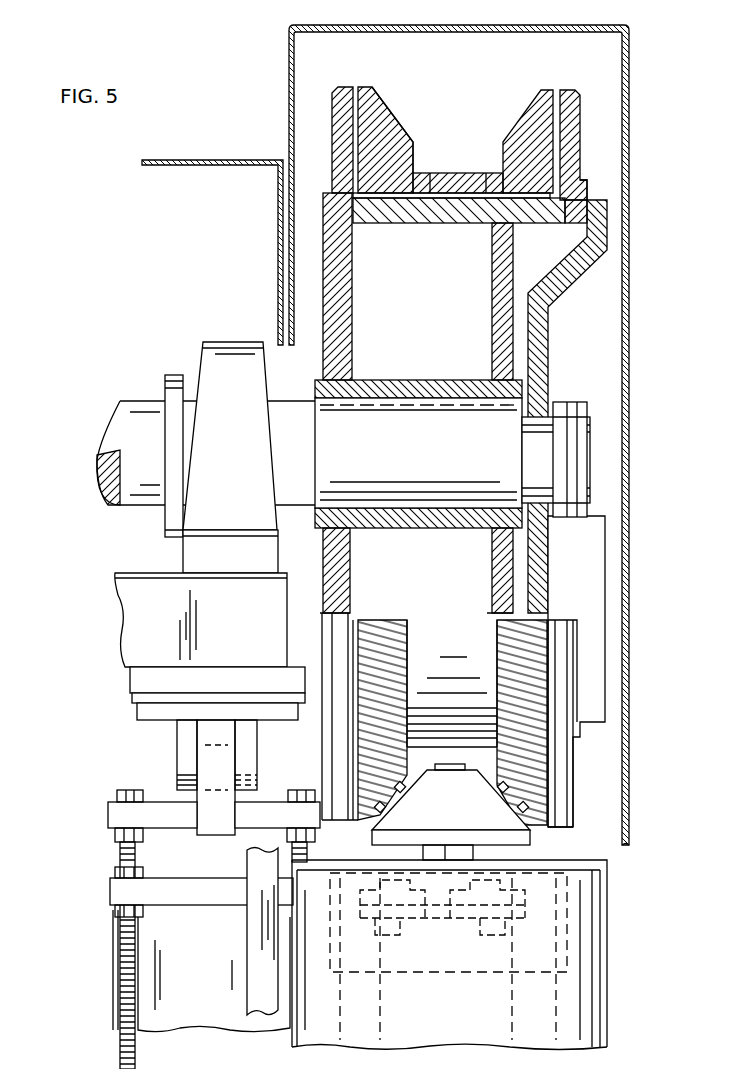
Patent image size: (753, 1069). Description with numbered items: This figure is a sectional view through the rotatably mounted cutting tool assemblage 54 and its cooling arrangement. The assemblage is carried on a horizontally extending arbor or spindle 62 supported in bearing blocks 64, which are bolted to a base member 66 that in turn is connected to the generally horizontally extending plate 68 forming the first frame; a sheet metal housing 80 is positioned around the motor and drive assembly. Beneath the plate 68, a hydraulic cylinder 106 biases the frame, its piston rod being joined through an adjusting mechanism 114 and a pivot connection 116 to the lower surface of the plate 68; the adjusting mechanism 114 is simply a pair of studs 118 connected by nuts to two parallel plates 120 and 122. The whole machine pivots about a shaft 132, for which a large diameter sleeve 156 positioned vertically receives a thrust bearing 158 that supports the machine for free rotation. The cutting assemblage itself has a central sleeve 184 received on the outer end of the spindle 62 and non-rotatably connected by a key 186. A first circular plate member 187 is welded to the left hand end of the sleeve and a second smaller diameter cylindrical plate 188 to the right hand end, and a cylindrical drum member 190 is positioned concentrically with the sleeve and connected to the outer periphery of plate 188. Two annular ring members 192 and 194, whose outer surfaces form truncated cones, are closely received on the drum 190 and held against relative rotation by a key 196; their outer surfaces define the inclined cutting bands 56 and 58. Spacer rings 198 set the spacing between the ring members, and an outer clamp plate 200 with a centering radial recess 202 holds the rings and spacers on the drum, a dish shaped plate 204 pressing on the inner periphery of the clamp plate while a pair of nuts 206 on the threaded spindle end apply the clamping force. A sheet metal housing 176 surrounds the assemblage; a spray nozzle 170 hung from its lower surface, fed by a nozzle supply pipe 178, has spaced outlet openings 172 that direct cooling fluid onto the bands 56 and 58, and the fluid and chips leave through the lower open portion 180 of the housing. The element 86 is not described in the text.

The cutting tool assemblage 54 is at (403, 115).
The inclined cutting band 56 is at (533, 108).
The inclined cutting band 58 is at (405, 126).
The spindle 62 is at (134, 400).
The bearing block 64 is at (222, 340).
The base member 66 is at (134, 626).
The plate 68 is at (137, 683).
The sheet metal housing 80 is at (192, 160).
The arm 86 is at (257, 949).
The hydraulic cylinder 106 is at (117, 1000).
The adjusting mechanism 114 is at (176, 748).
The pivot connection 116 is at (243, 748).
The stud 118 is at (125, 968).
The plate 120 is at (118, 893).
The plate 122 is at (118, 813).
The shaft 132 is at (380, 1008).
The sleeve 156 is at (607, 1004).
The thrust bearing 158 is at (442, 972).
The spray nozzle 170 is at (531, 838).
The outlet opening 172 is at (497, 795).
The sheet metal housing 176 is at (625, 773).
The nozzle supply pipe 178 is at (425, 854).
The lower open portion 180 is at (627, 848).
The central sleeve 184 is at (418, 380).
The key 186 is at (436, 417).
The first circular plate member 187 is at (347, 291).
The second cylindrical plate 188 is at (496, 291).
The cylindrical drum member 190 is at (435, 217).
The annular ring member 192 is at (377, 128).
The annular ring member 194 is at (547, 125).
The key 196 is at (390, 200).
The spacer ring 198 is at (474, 157).
The clamp plate 200 is at (580, 151).
The radial recess 202 is at (555, 217).
The dish shaped plate 204 is at (548, 327).
The nut 206 is at (572, 401).